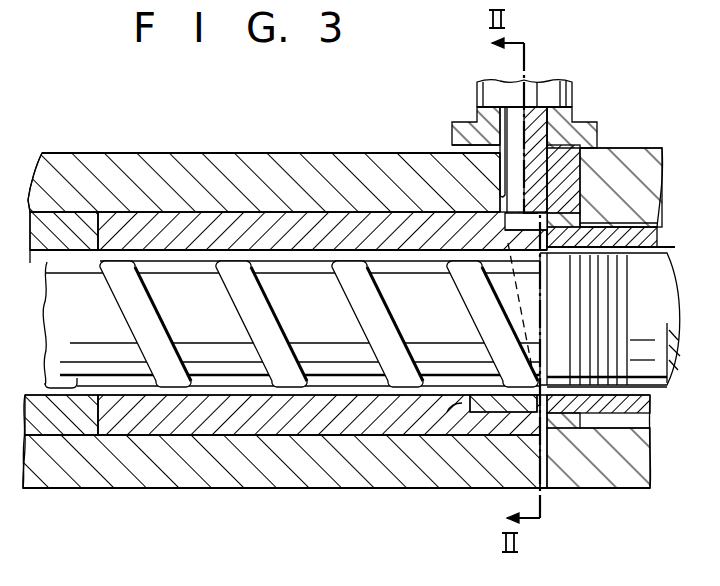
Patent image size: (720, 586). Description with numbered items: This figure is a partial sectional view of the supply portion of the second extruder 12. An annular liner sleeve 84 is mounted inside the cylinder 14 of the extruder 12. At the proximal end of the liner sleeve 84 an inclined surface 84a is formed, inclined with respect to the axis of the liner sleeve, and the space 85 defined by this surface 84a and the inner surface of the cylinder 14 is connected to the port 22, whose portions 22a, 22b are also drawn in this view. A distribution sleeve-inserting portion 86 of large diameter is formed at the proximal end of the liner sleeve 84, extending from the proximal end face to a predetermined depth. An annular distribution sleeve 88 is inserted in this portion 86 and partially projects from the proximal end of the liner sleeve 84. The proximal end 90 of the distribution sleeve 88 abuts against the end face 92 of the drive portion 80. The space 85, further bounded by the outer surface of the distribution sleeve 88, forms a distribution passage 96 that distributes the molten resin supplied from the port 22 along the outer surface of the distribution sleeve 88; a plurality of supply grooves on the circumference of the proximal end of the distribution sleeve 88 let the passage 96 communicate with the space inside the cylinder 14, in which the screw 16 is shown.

The extruder 12 is at (224, 150).
The cylinder 14 is at (220, 482).
The screw 16 is at (50, 314).
The port 22 is at (537, 156).
The bolt flange portion 22a is at (503, 184).
The bolt flange portion 22b is at (545, 160).
The drive portion 80 is at (646, 145).
The annular liner sleeve 84 is at (143, 220).
The inclined surface 84a is at (525, 324).
The space 85 is at (520, 262).
The distribution sleeve-inserting portion 86 is at (462, 403).
The annular distribution sleeve 88 is at (505, 407).
The proximal end 90 is at (550, 240).
The end face 92 is at (543, 208).
The distribution passage 96 is at (500, 165).